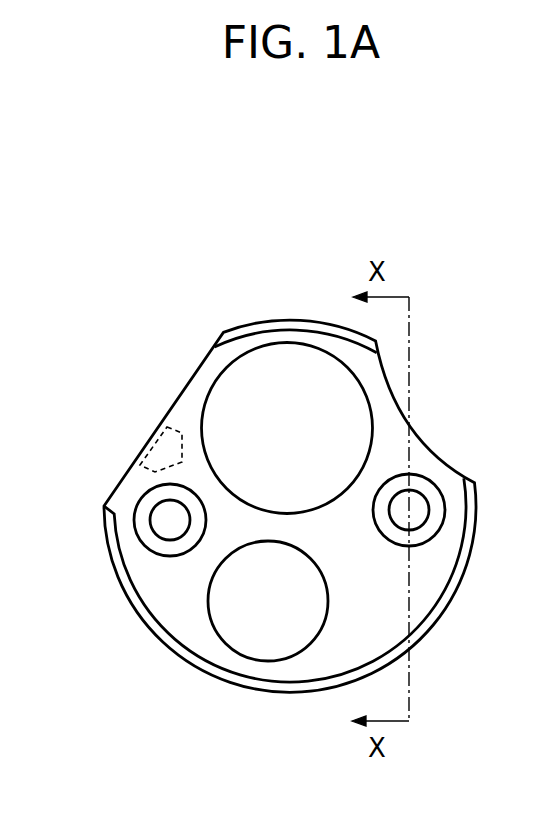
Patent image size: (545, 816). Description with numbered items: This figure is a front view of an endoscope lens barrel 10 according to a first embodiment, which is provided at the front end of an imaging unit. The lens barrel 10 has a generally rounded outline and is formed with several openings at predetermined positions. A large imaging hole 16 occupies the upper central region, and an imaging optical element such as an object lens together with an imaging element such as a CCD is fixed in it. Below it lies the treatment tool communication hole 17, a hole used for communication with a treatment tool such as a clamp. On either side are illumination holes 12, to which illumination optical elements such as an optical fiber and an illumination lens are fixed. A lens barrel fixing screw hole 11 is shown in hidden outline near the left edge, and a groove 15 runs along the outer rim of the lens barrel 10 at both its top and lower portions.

The endoscope lens barrel 10 is at (303, 295).
The lens barrel fixing screw hole 11 is at (158, 447).
The illumination hole 12 is at (167, 522).
The groove 15 is at (262, 327).
The imaging hole 16 is at (245, 420).
The treatment tool communication hole 17 is at (245, 615).